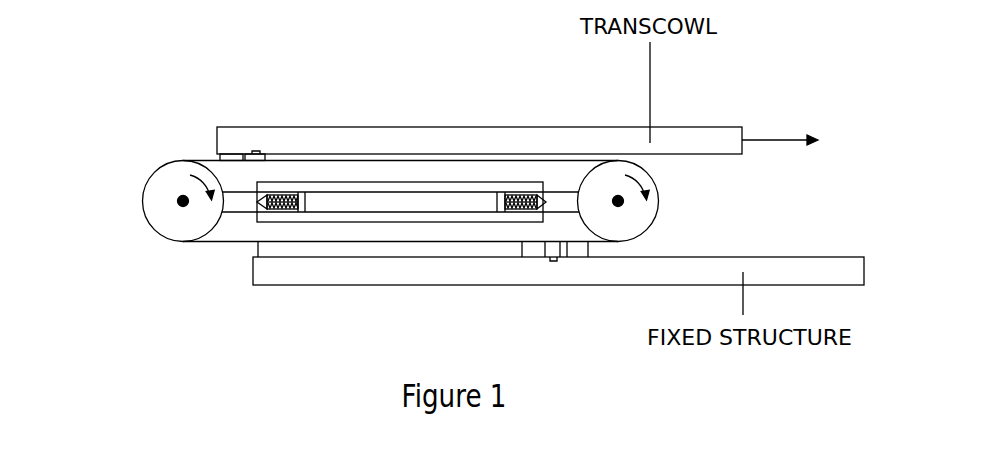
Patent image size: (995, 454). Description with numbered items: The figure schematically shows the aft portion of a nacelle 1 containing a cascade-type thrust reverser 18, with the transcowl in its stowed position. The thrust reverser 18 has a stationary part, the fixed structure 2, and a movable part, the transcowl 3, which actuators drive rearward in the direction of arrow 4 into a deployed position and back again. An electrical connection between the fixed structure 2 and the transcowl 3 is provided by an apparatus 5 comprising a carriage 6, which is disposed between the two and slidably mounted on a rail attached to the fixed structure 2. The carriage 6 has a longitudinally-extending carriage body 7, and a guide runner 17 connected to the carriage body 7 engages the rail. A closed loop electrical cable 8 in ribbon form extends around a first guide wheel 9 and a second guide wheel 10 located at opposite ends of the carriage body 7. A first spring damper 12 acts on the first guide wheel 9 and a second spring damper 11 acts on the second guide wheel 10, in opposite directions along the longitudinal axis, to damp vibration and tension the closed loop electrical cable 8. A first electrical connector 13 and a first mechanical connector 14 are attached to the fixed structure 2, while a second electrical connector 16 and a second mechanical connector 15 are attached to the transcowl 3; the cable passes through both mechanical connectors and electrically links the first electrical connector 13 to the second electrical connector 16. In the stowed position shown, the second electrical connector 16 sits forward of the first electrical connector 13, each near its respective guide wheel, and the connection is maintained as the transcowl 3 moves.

The nacelle 1 is at (247, 103).
The fixed structure 2 is at (345, 285).
The transcowl 3 is at (703, 125).
The arrow 4 is at (783, 138).
The apparatus 5 is at (450, 187).
The carriage 6 is at (504, 190).
The carriage body 7 is at (293, 188).
The closed loop electrical cable 8 is at (578, 160).
The first guide wheel 9 is at (647, 202).
The second guide wheel 10 is at (162, 199).
The second spring damper 11 is at (272, 208).
The first spring damper 12 is at (517, 205).
The first electrical connector 13 is at (580, 260).
The first mechanical connector 14 is at (553, 261).
The second mechanical connector 15 is at (253, 153).
The second electrical connector 16 is at (221, 152).
The guide runner 17 is at (402, 248).
The thrust reverser 18 is at (378, 98).